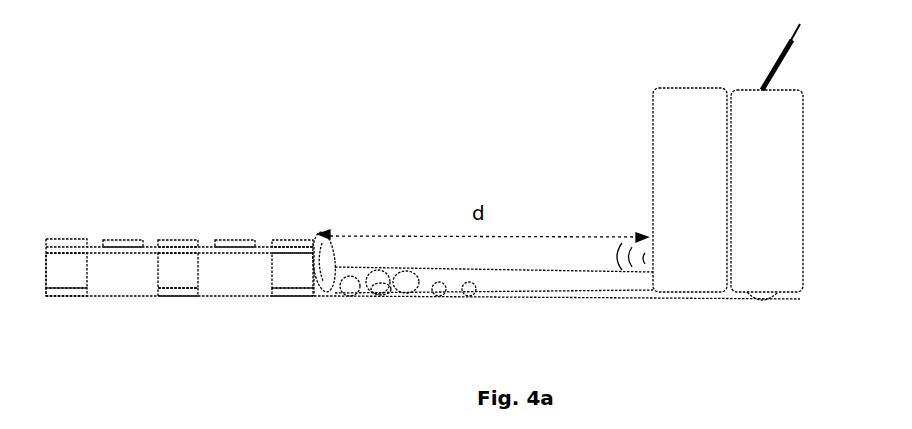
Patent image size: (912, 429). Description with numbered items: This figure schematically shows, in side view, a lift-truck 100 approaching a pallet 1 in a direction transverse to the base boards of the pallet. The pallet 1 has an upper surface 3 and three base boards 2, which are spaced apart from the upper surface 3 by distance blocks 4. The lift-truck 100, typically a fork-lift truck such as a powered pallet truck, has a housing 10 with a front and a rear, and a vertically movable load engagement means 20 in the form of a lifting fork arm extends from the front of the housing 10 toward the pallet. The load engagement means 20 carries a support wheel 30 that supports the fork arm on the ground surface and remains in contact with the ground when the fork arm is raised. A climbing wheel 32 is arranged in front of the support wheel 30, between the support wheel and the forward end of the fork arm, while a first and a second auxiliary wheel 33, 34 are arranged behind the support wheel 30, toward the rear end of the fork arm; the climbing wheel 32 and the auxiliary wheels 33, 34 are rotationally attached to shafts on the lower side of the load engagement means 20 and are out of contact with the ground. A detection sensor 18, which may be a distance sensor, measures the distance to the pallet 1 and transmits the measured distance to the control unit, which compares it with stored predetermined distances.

The lift-truck 100 is at (716, 156).
The housing 10 is at (652, 157).
The detection sensor 18 is at (795, 37).
The pallet 1 is at (180, 227).
The base boards 2 is at (267, 297).
The upper surface 3 is at (185, 237).
The distance blocks 4 is at (178, 272).
The load engagement means 20 is at (362, 263).
The support wheel 30 is at (370, 297).
The climbing wheel 32 is at (348, 294).
The first auxiliary wheel 33 is at (437, 296).
The second auxiliary wheel 34 is at (472, 300).